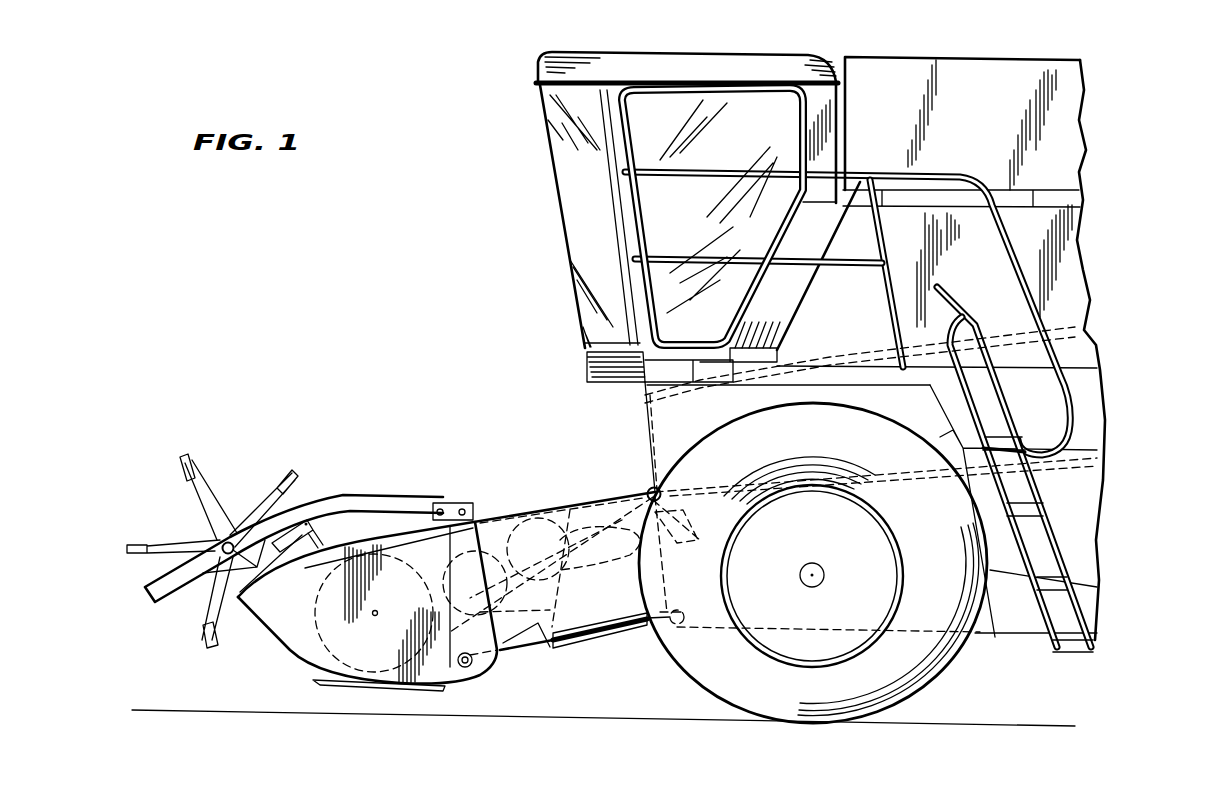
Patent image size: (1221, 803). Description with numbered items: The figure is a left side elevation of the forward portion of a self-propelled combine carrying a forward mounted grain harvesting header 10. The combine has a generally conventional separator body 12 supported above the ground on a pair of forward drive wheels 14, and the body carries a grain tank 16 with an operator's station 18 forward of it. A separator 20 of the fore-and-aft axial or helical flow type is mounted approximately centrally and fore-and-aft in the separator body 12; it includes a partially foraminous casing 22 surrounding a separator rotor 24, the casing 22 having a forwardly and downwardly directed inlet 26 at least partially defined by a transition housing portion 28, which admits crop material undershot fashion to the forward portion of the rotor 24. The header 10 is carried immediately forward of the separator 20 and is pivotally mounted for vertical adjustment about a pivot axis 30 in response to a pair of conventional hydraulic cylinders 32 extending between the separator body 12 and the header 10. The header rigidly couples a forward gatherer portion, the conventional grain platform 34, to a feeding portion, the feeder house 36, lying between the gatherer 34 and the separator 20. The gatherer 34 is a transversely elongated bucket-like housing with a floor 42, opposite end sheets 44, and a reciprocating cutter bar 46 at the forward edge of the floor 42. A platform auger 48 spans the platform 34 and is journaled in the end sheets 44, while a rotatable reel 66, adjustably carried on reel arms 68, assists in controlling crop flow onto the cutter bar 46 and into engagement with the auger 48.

The header 10 is at (339, 450).
The separator body 12 is at (1085, 243).
The forward drive wheels 14 is at (962, 676).
The grain tank 16 is at (950, 57).
The operator's station 18 is at (577, 223).
The separator 20 is at (630, 420).
The casing 22 is at (1067, 317).
The separator rotor 24 is at (1060, 338).
The inlet 26 is at (700, 505).
The transition housing portion 28 is at (728, 540).
The pivot axis 30 is at (649, 489).
The hydraulic cylinders 32 is at (606, 642).
The grain platform 34 is at (303, 481).
The feeder house 36 is at (563, 561).
The floor 42 is at (452, 683).
The end sheets 44 is at (296, 645).
The cutter bar 46 is at (322, 683).
The platform auger 48 is at (318, 600).
The reel 66 is at (182, 613).
The reel arms 68 is at (392, 496).